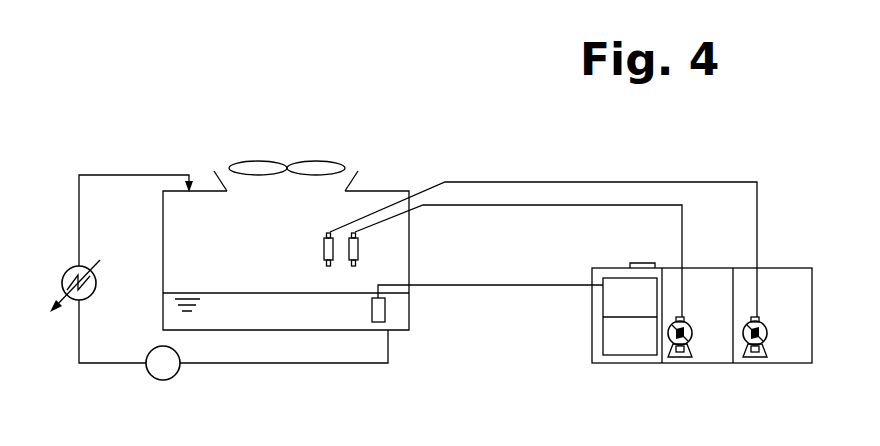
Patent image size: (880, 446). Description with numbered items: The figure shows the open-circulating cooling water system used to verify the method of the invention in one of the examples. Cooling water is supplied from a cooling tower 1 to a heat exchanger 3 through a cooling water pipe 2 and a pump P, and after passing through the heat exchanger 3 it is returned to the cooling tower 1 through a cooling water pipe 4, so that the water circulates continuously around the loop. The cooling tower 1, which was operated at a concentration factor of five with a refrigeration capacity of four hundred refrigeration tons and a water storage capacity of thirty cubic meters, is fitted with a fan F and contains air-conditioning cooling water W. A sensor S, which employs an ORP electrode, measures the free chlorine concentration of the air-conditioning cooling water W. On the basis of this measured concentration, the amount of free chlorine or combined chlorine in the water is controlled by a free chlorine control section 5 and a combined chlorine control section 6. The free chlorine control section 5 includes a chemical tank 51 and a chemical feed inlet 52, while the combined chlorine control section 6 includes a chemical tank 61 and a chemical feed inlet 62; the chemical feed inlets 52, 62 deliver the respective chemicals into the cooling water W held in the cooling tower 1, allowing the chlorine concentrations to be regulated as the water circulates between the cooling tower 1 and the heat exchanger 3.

The cooling tower 1 is at (203, 92).
The cooling water pipe 2 is at (260, 363).
The heat exchanger 3 is at (64, 271).
The cooling water pipe 4 is at (125, 175).
The free chlorine control section 5 is at (600, 302).
The combined chlorine control section 6 is at (627, 357).
The chemical tank 51 is at (692, 350).
The chemical feed inlet 52 is at (358, 250).
The chemical tank 61 is at (768, 350).
The chemical feed inlet 62 is at (322, 249).
The fan F is at (258, 161).
The air-conditioning cooling water W is at (215, 292).
The sensor S is at (385, 311).
The pump P is at (163, 363).